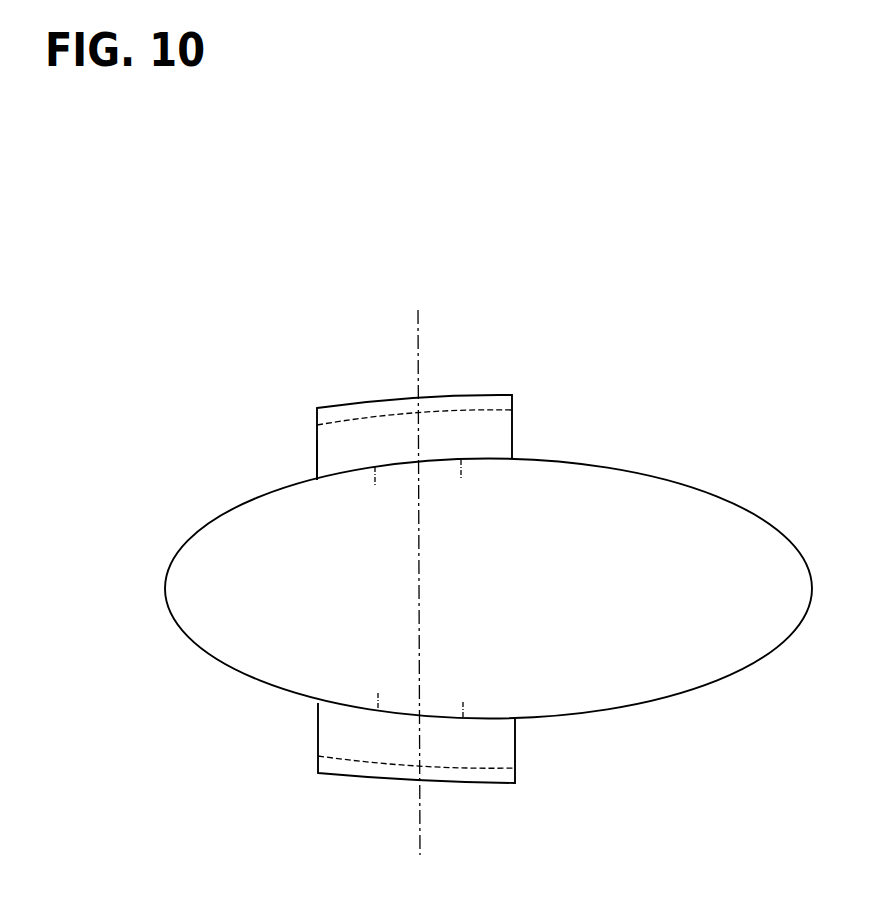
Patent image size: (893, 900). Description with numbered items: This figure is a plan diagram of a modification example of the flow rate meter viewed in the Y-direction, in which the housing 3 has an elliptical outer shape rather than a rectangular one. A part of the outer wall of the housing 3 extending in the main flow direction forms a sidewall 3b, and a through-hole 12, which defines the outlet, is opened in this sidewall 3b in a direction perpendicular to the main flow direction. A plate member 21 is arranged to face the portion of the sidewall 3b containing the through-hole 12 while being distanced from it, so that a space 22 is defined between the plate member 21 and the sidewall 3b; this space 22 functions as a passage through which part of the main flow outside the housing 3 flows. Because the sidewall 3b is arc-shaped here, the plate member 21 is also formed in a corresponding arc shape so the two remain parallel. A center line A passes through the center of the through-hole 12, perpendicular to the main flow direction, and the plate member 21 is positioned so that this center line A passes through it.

The center line A is at (420, 330).
The housing 3 is at (657, 483).
The sidewall 3b is at (343, 472).
The through-hole 12 is at (443, 460).
The plate member 21 is at (388, 408).
The space 22 is at (357, 445).